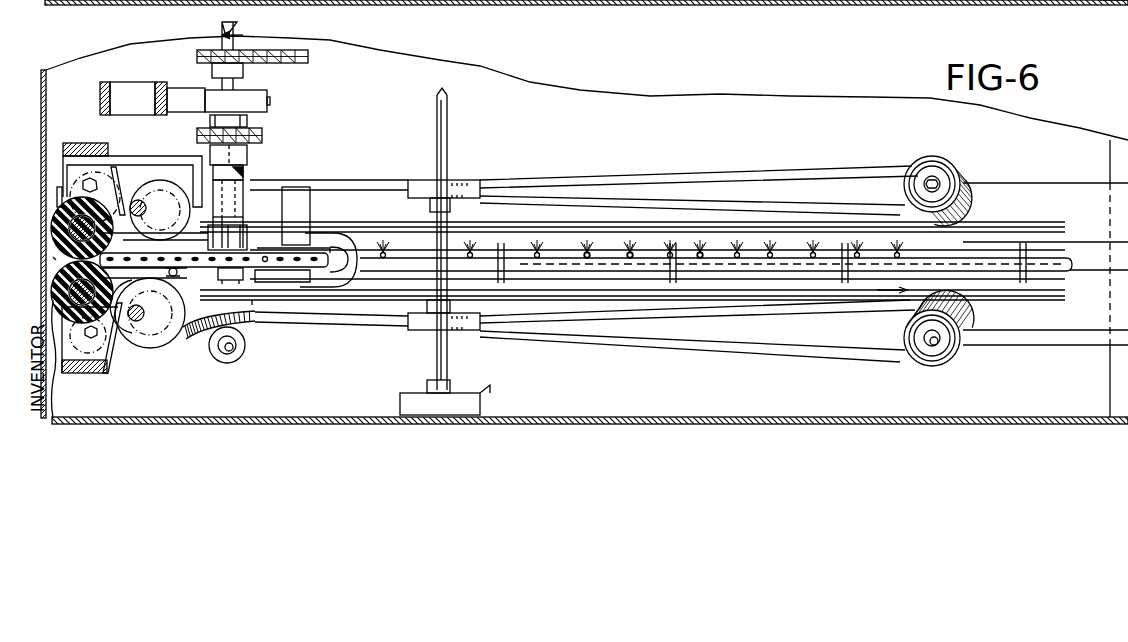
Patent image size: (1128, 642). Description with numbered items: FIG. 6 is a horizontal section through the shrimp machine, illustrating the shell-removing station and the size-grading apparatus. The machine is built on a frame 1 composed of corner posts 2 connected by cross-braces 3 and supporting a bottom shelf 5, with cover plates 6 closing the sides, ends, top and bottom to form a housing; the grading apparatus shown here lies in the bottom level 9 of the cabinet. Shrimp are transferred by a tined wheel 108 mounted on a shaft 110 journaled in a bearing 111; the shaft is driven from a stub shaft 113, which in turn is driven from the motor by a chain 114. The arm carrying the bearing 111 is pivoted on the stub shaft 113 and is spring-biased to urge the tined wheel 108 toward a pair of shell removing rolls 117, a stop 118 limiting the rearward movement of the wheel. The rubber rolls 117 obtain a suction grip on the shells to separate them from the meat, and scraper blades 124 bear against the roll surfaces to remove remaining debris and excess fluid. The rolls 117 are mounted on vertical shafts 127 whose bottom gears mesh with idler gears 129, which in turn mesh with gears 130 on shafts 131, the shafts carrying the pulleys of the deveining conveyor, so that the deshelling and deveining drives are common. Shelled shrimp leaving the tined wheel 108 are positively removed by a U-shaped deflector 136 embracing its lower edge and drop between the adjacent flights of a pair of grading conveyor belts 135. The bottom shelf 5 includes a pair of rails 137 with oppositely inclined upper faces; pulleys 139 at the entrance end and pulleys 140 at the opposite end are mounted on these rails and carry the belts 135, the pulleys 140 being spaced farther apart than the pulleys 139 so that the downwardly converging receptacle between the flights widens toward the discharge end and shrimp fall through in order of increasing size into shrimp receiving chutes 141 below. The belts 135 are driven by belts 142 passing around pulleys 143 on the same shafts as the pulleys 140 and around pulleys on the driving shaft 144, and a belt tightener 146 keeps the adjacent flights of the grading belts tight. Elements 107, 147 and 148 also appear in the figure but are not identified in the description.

The frame 1 is at (1123, 14).
The corner posts 2 is at (1127, 407).
The cross-braces 3 is at (1108, 163).
The bottom shelf 5 is at (1020, 178).
The cover plates 6 is at (1038, 7).
The bottom level 9 is at (548, 93).
The roller nip 107 is at (50, 255).
The tined wheel 108 is at (303, 265).
The shaft 110 is at (244, 168).
The bearing 111 is at (243, 200).
The stub shaft 113 is at (243, 82).
The chain 114 is at (280, 50).
The shell removing rolls 117 is at (52, 282).
The stop 118 is at (172, 157).
The scraper blades 124 is at (56, 195).
The vertical shafts 127 is at (52, 222).
The idler gears 129 is at (70, 143).
The gears 130 is at (140, 200).
The shafts 131 is at (135, 173).
The grading conveyor belts 135 is at (370, 237).
The U-shaped deflector 136 is at (323, 233).
The rails 137 is at (1064, 220).
The pulleys 139 is at (180, 337).
The pulleys 140 is at (967, 177).
The shrimp receiving chutes 141 is at (813, 277).
The belts 142 is at (698, 177).
The pulleys 143 is at (933, 167).
The driving shaft 144 is at (447, 137).
The belt tightener 146 is at (238, 352).
The nozzle 147 is at (510, 262).
The nozzle 148 is at (633, 257).